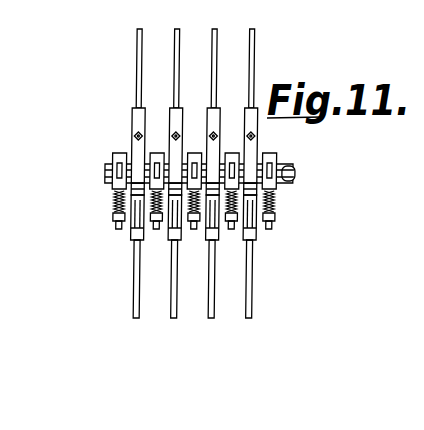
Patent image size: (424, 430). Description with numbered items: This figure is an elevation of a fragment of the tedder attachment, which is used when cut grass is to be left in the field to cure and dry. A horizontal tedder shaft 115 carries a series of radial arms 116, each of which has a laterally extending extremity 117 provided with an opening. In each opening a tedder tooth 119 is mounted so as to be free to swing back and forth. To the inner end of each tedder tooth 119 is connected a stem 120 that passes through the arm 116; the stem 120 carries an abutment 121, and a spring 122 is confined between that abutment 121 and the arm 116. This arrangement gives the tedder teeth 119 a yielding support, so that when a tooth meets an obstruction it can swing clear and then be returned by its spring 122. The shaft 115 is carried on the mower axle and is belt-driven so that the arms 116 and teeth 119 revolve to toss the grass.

The shaft 115 is at (357, 174).
The radial arm 116 is at (300, 141).
The laterally extending extremity 117 is at (313, 257).
The tedder tooth 119 is at (310, 297).
The stem 120 is at (115, 226).
The abutment 121 is at (340, 221).
The spring 122 is at (115, 205).